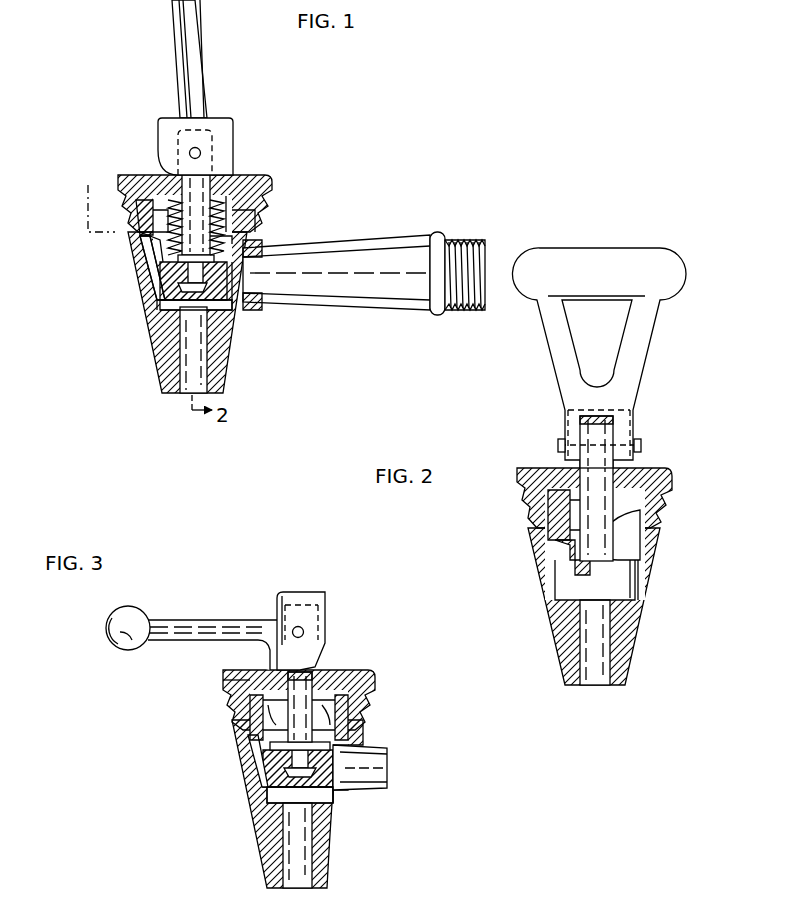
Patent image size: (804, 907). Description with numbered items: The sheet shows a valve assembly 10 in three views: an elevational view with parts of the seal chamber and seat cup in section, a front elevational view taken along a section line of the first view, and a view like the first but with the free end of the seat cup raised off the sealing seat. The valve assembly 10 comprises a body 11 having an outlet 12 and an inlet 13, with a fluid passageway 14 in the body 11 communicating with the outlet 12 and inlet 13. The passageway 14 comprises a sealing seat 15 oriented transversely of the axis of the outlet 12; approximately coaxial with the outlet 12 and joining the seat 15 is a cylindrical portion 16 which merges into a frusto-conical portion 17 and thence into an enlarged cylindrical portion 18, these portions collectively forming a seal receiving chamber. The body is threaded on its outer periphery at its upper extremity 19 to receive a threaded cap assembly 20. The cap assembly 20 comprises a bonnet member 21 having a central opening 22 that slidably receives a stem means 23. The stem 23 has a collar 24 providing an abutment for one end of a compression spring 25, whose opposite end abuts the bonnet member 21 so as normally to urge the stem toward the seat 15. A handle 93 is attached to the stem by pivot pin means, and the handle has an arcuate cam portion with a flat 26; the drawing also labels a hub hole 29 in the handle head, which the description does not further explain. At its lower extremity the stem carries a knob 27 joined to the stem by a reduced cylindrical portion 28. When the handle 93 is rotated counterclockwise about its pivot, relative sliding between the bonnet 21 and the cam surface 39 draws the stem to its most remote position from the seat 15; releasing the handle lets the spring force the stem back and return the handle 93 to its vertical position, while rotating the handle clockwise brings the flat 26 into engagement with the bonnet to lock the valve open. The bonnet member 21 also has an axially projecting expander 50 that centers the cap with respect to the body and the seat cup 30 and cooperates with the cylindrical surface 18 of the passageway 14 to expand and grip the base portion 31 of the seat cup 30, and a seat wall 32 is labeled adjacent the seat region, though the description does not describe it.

In FIG. 1, the valve assembly 10 is at (131, 96).
In FIG. 2, the valve assembly 10 is at (496, 554).
In FIG. 3, the valve assembly 10 is at (166, 800).
In FIG. 1, the body 11 is at (128, 278).
In FIG. 2, the body 11 is at (551, 621).
In FIG. 3, the body 11 is at (256, 820).
In FIG. 1, the outlet 12 is at (200, 375).
In FIG. 2, the outlet 12 is at (603, 665).
In FIG. 3, the outlet 12 is at (306, 875).
In FIG. 1, the inlet 13 is at (285, 268).
In FIG. 3, the inlet 13 is at (392, 774).
In FIG. 1, the fluid passageway 14 is at (232, 302).
In FIG. 2, the fluid passageway 14 is at (636, 581).
In FIG. 3, the fluid passageway 14 is at (341, 800).
In FIG. 1, the sealing seat 15 is at (170, 300).
In FIG. 3, the sealing seat 15 is at (256, 800).
In FIG. 1, the cylindrical portion 16 is at (155, 296).
In FIG. 3, the cylindrical portion 16 is at (321, 805).
In FIG. 1, the frusto-conical portion 17 is at (148, 268).
In FIG. 2, the frusto-conical portion 17 is at (638, 548).
In FIG. 2, the enlarged cylindrical portion 18 is at (548, 503).
In FIG. 1, the upper extremity 19 is at (136, 213).
In FIG. 3, the upper extremity 19 is at (350, 718).
In FIG. 1, the cap assembly 20 is at (252, 172).
In FIG. 2, the cap assembly 20 is at (661, 467).
In FIG. 3, the cap assembly 20 is at (351, 668).
In FIG. 3, the bonnet member 21 is at (226, 675).
In FIG. 1, the central opening 22 is at (183, 178).
In FIG. 2, the central opening 22 is at (596, 488).
In FIG. 3, the central opening 22 is at (316, 676).
In FIG. 1, the stem means 23 is at (229, 243).
In FIG. 2, the stem means 23 is at (583, 437).
In FIG. 3, the stem means 23 is at (300, 673).
In FIG. 3, the collar 24 is at (263, 755).
In FIG. 1, the compression spring 25 is at (216, 216).
In FIG. 2, the compression spring 25 is at (569, 545).
In FIG. 1, the flat 26 is at (234, 148).
In FIG. 2, the flat 26 is at (628, 432).
In FIG. 3, the flat 26 is at (301, 631).
In FIG. 1, the knob 27 is at (205, 292).
In FIG. 3, the knob 27 is at (250, 770).
In FIG. 3, the reduced cylindrical portion 28 is at (346, 760).
In FIG. 1, the hub hole 29 is at (202, 152).
In FIG. 1, the seat cup 30 is at (140, 233).
In FIG. 2, the seat cup 30 is at (619, 551).
In FIG. 3, the seat cup 30 is at (256, 780).
In FIG. 1, the base portion 31 is at (246, 191).
In FIG. 1, the seat wall 32 is at (226, 306).
In FIG. 1, the cam surface 39 is at (156, 135).
In FIG. 3, the expander 50 is at (259, 697).
In FIG. 1, the handle 93 is at (205, 60).
In FIG. 2, the handle 93 is at (661, 250).
In FIG. 3, the handle 93 is at (114, 660).